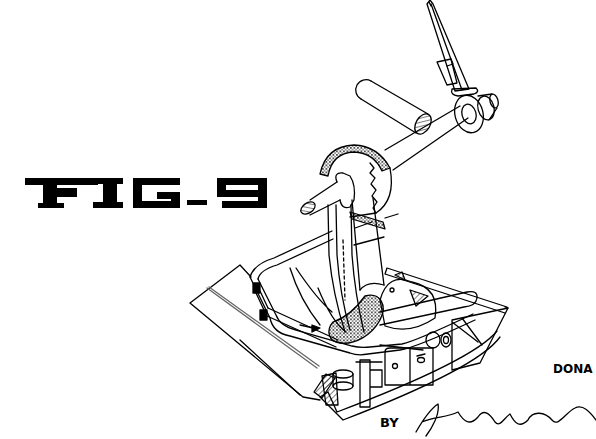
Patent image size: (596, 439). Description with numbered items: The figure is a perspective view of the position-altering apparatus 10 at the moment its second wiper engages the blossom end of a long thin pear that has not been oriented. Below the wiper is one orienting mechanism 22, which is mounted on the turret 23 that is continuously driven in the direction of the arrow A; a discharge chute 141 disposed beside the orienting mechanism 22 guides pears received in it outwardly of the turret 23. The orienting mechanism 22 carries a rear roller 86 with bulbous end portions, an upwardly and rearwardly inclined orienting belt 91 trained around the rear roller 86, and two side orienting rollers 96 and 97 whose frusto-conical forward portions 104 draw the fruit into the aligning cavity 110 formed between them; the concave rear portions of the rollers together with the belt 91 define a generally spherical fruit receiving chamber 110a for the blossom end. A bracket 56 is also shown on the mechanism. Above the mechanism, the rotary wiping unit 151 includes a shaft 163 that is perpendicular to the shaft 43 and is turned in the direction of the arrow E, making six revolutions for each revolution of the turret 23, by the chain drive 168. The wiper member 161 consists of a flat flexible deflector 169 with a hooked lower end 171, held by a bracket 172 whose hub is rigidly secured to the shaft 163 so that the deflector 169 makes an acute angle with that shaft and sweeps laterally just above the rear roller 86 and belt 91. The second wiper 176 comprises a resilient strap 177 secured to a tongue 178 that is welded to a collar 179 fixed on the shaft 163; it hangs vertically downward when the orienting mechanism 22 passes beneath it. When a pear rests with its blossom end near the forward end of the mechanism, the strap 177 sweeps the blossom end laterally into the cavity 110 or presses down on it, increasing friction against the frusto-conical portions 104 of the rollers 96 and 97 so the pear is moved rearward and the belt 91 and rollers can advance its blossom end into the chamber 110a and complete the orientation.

The position-altering apparatus 10 is at (326, 93).
The orienting mechanism 22 is at (284, 252).
The turret 23 is at (452, 380).
The shaft 43 is at (370, 84).
The bracket 56 is at (333, 403).
The rear roller 86 is at (390, 267).
The orienting belt 91 is at (462, 290).
The side orienting roller 96 is at (335, 300).
The side orienting roller 97 is at (455, 319).
The frusto-conical forward portion 104 is at (321, 311).
The aligning cavity 110 is at (313, 328).
The fruit receiving chamber 110a is at (423, 276).
The discharge chute 141 is at (213, 315).
The rotary wiping unit 151 is at (449, 137).
The wiper member 161 is at (463, 92).
The shaft 163 is at (401, 154).
The chain drive 168 is at (333, 150).
The deflector 169 is at (440, 42).
The hooked lower end 171 is at (428, 20).
The bracket 172 is at (464, 89).
The wiper 176 is at (367, 257).
The resilient strap 177 is at (360, 248).
The tongue 178 is at (340, 223).
The collar 179 is at (322, 167).
The direction of turret rotation A is at (512, 342).
The direction of shaft rotation E is at (517, 108).